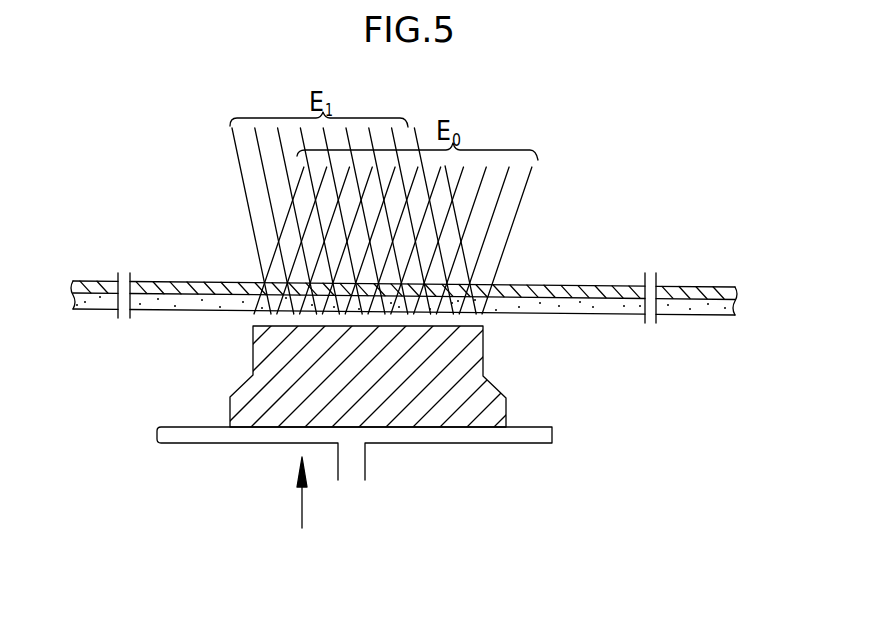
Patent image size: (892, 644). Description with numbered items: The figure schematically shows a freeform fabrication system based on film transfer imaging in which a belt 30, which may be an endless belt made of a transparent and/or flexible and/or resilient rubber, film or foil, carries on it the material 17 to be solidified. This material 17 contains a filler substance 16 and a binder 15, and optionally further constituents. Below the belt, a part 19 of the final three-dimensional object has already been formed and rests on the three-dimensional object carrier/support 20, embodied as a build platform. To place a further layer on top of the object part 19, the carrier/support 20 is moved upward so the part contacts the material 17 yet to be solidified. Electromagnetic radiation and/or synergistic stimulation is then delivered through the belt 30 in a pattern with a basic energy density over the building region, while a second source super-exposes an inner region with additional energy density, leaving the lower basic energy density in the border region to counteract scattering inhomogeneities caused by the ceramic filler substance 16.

The binder 15 is at (607, 308).
The filler substance 16 is at (712, 305).
The material to be solidified 17 is at (711, 357).
The part of the final three-dimensional object 19 is at (483, 388).
The three-dimensional object carrier/support 20 is at (506, 437).
The belt 30 is at (543, 286).